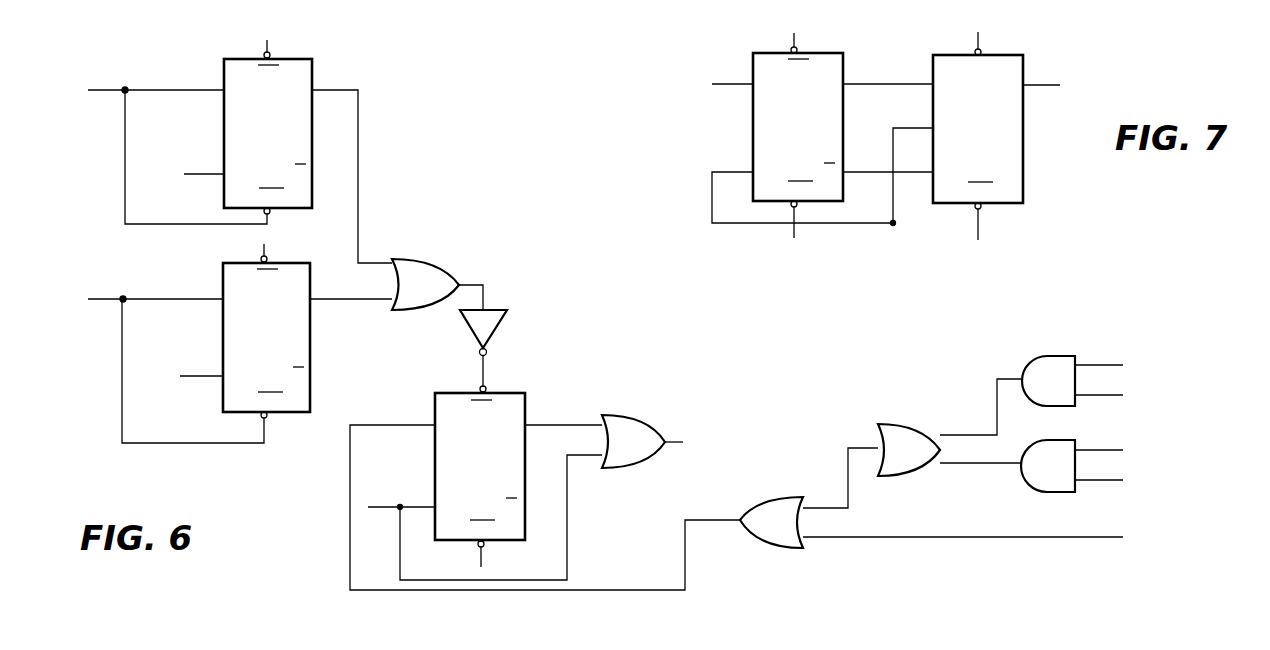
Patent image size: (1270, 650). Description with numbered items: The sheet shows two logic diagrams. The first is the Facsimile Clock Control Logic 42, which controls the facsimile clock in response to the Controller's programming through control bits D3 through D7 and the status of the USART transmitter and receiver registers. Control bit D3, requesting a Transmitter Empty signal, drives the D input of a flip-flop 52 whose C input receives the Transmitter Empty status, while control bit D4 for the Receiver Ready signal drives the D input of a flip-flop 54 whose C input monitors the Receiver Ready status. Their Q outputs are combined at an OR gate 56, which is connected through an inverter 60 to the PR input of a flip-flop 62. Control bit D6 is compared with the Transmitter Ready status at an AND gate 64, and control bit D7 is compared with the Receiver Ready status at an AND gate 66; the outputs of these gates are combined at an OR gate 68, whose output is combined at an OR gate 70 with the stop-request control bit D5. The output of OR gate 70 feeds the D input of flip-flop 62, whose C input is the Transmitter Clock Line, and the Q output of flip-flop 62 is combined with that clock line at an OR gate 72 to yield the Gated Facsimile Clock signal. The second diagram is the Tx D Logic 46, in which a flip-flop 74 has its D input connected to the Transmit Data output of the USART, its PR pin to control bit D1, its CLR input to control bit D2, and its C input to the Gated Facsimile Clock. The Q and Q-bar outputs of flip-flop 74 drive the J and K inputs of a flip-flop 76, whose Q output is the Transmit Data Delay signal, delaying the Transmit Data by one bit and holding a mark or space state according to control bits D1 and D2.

In FIG. 6, the Facsimile Clock Control Logic 42 is at (318, 440).
In FIG. 6, the flip-flop 52 is at (318, 68).
In FIG. 6, the flip-flop 54 is at (298, 347).
In FIG. 6, the OR gate 56 is at (432, 272).
In FIG. 6, the inverter 60 is at (493, 318).
In FIG. 6, the flip-flop 62 is at (512, 400).
In FIG. 6, the AND gate 64 is at (1045, 478).
In FIG. 6, the AND gate 66 is at (1060, 367).
In FIG. 6, the OR gate 68 is at (912, 433).
In FIG. 6, the OR gate 70 is at (780, 502).
In FIG. 6, the OR gate 72 is at (620, 425).
In FIG. 7, the Tx D Logic 46 is at (728, 118).
In FIG. 7, the flip-flop 74 is at (757, 146).
In FIG. 7, the flip-flop 76 is at (1014, 147).